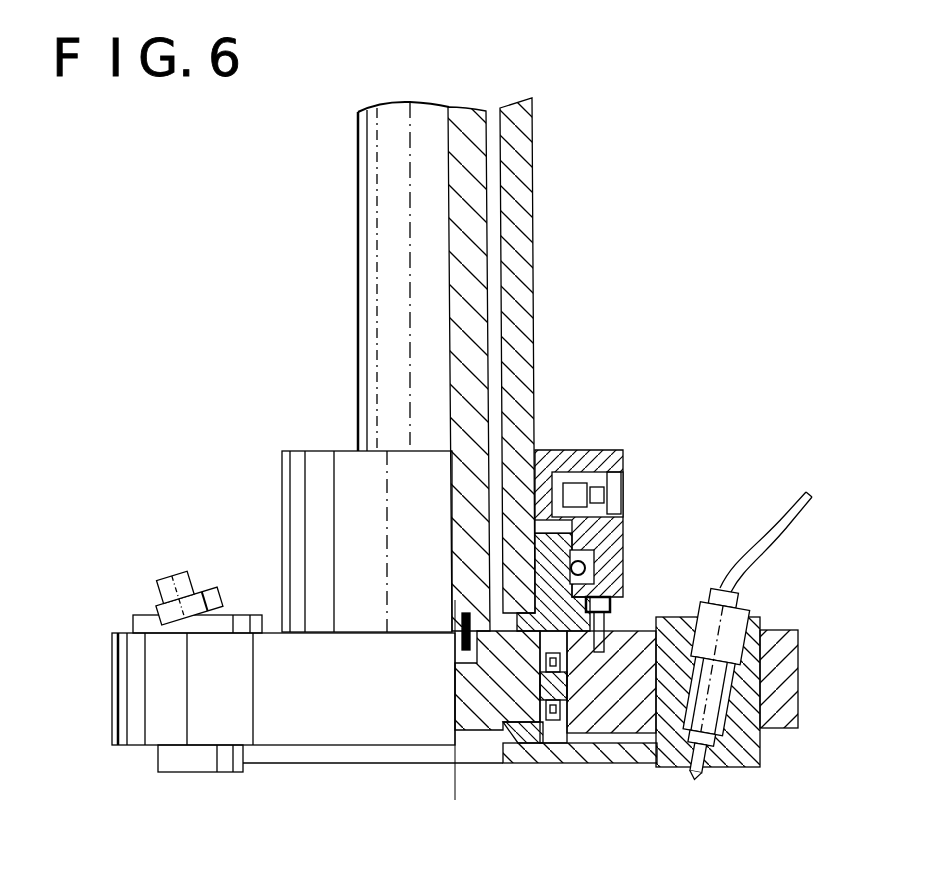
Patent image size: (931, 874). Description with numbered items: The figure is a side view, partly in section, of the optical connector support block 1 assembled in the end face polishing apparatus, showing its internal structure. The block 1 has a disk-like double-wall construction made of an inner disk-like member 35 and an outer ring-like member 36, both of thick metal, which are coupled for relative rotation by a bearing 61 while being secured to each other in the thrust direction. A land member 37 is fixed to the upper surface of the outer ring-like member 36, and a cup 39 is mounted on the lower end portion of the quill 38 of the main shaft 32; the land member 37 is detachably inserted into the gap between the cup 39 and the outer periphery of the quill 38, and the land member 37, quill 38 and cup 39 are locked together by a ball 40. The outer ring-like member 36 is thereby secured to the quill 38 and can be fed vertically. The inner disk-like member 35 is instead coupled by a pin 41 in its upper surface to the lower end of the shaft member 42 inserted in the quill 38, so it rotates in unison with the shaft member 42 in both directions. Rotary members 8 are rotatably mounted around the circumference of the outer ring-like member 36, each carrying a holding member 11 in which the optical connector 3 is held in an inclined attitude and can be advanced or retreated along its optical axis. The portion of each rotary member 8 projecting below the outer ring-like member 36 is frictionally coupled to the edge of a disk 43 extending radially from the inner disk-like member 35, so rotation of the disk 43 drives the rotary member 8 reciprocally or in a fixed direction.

The optical connector support block 1 is at (154, 774).
The optical connector 3 is at (695, 774).
The rotary member 8 is at (238, 615).
The holding member 11 is at (170, 580).
The main shaft 32 is at (403, 95).
The inner disk-like member 35 is at (478, 712).
The outer ring-like member 36 is at (625, 710).
The land member 37 is at (612, 612).
The quill 38 is at (533, 206).
The cup 39 is at (622, 457).
The ball 40 is at (586, 568).
The pin 41 is at (460, 641).
The shaft member 42 is at (462, 128).
The disk 43 is at (528, 740).
The bearing 61 is at (560, 735).